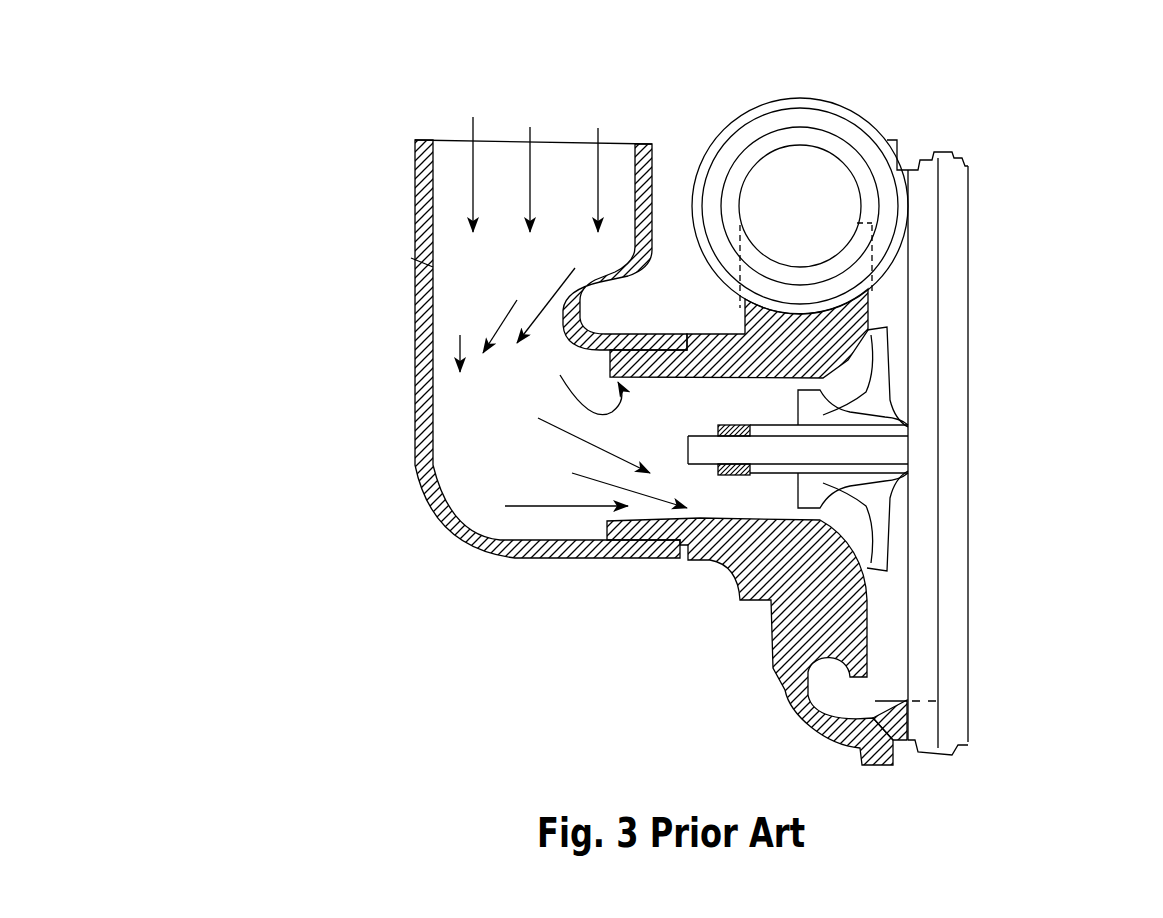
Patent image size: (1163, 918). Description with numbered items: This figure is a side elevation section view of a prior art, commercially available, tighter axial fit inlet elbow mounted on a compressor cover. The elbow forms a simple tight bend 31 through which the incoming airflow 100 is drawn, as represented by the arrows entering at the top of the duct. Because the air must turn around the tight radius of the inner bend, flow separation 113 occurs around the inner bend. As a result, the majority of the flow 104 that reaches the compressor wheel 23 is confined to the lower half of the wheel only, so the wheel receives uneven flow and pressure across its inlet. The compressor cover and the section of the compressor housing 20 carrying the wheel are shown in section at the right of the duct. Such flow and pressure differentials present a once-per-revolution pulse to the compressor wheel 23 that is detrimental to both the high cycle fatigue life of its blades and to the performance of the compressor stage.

The incoming airflow 100 is at (542, 127).
The flow reaching the compressor wheel 104 is at (535, 503).
The simple tight bend 31 is at (437, 515).
The flow separation 113 is at (630, 400).
The compressor wheel 23 is at (825, 415).
The housing 20 is at (778, 623).